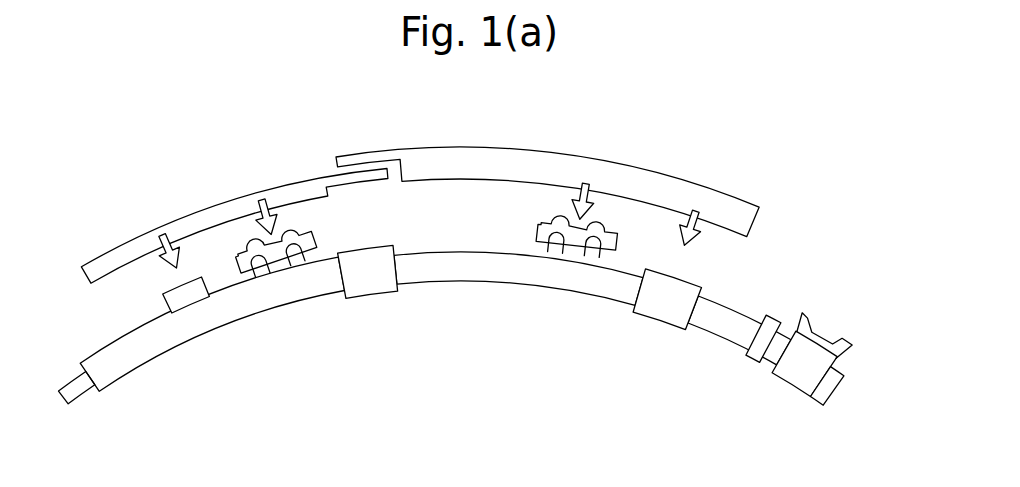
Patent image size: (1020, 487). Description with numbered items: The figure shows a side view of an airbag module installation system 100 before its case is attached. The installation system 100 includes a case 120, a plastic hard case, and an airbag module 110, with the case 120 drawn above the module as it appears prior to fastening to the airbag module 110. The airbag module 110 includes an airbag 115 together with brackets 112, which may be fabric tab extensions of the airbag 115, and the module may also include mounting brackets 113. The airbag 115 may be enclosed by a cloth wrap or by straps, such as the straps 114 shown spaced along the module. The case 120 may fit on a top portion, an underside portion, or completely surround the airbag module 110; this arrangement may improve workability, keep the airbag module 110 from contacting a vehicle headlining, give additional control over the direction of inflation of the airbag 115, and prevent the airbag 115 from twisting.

The airbag module installation system 100 is at (493, 255).
The airbag module 110 is at (456, 334).
The brackets 112 is at (177, 298).
The mounting brackets 113 is at (603, 227).
The straps 114 is at (360, 283).
The airbag 115 is at (552, 278).
The case 120 is at (484, 147).